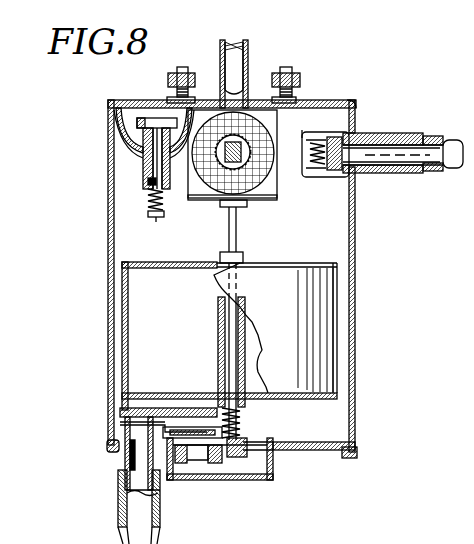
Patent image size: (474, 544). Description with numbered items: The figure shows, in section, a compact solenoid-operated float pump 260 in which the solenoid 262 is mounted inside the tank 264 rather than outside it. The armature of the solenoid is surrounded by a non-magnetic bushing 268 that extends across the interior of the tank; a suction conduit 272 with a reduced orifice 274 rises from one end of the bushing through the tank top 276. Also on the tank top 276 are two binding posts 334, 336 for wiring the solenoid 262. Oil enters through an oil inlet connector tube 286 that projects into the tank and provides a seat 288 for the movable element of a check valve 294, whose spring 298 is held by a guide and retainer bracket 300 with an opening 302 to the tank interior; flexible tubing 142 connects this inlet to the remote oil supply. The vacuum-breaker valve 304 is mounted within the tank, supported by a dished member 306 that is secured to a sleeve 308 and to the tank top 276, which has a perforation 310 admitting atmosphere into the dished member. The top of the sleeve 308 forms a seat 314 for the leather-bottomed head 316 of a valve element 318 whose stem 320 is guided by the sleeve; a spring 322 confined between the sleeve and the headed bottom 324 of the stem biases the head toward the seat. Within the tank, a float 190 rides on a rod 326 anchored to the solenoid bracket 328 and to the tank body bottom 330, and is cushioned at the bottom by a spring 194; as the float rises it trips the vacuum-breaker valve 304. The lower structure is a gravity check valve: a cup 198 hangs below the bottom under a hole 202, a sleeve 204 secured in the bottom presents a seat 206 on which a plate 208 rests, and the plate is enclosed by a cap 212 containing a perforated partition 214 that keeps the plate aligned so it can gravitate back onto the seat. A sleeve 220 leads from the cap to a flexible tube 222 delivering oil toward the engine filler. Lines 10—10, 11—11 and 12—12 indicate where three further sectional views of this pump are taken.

The section line 10 is at (250, 22).
The section line 11 is at (140, 150).
The section line 12 is at (296, 190).
The flexible tubing 142 is at (402, 173).
The float 190 is at (307, 259).
The spring 194 is at (243, 420).
The cup 198 is at (258, 479).
The hole 202 is at (262, 446).
The sleeve 204 is at (200, 450).
The seat 206 is at (185, 458).
The plate 208 is at (183, 400).
The cap 212 is at (127, 410).
The partition 214 is at (216, 400).
The sleeve 220 is at (125, 458).
The flexible tube 222 is at (120, 502).
The solenoid-operated float pump 260 is at (120, 290).
The solenoid 262 is at (256, 200).
The tank 264 is at (120, 338).
The non-magnetic bushing 268 is at (231, 163).
The suction conduit 272 is at (250, 62).
The reduced orifice 274 is at (250, 25).
The tank top 276 is at (167, 430).
The oil inlet connector tube 286 is at (367, 138).
The seat 288 is at (363, 171).
The check valve 294 is at (362, 133).
The spring 298 is at (323, 178).
The guide and retainer bracket 300 is at (340, 175).
The opening 302 is at (340, 122).
The vacuum-breaker valve 304 is at (140, 200).
The dished member 306 is at (135, 125).
The sleeve 308 is at (143, 170).
The perforation 310 is at (157, 118).
The seat 314 is at (118, 114).
The head 316 is at (150, 105).
The valve element 318 is at (150, 193).
The stem 320 is at (225, 205).
The spring 322 is at (148, 213).
The headed bottom 324 is at (160, 217).
The rod 326 is at (229, 235).
The solenoid bracket 328 is at (228, 215).
The tank body bottom 330 is at (318, 450).
The binding post 334 is at (305, 73).
The binding post 336 is at (182, 67).